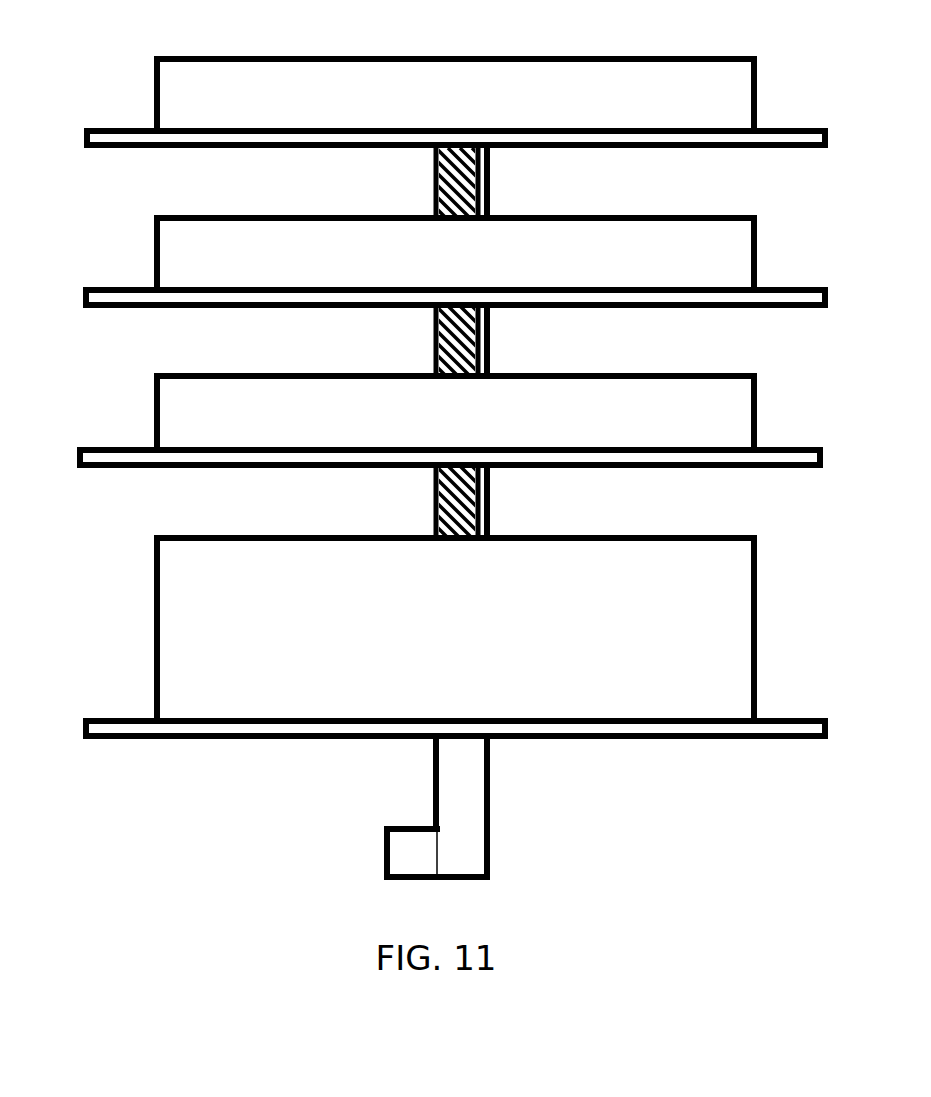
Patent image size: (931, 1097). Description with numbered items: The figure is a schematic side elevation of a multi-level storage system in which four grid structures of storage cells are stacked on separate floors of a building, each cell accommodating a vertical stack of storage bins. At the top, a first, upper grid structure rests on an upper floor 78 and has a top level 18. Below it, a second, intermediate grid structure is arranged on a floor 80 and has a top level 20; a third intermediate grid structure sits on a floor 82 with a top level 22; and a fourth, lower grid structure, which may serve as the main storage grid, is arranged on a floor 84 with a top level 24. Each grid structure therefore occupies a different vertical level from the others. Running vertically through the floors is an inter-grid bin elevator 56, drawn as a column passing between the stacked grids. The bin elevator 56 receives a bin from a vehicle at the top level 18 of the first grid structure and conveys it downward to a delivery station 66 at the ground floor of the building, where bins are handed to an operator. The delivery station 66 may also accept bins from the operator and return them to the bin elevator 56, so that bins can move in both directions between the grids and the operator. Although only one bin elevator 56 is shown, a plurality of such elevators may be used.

The top level of first grid structure 18 is at (240, 57).
The top level of second grid structure 20 is at (235, 215).
The top level of third grid structure 22 is at (210, 373).
The top level of fourth grid structure 24 is at (200, 535).
The bin elevator 56 is at (490, 203).
The delivery station 66 is at (384, 855).
The upper floor 78 is at (113, 128).
The floor of second grid structure 80 is at (130, 287).
The floor of third grid structure 82 is at (105, 447).
The floor of fourth grid structure 84 is at (115, 718).